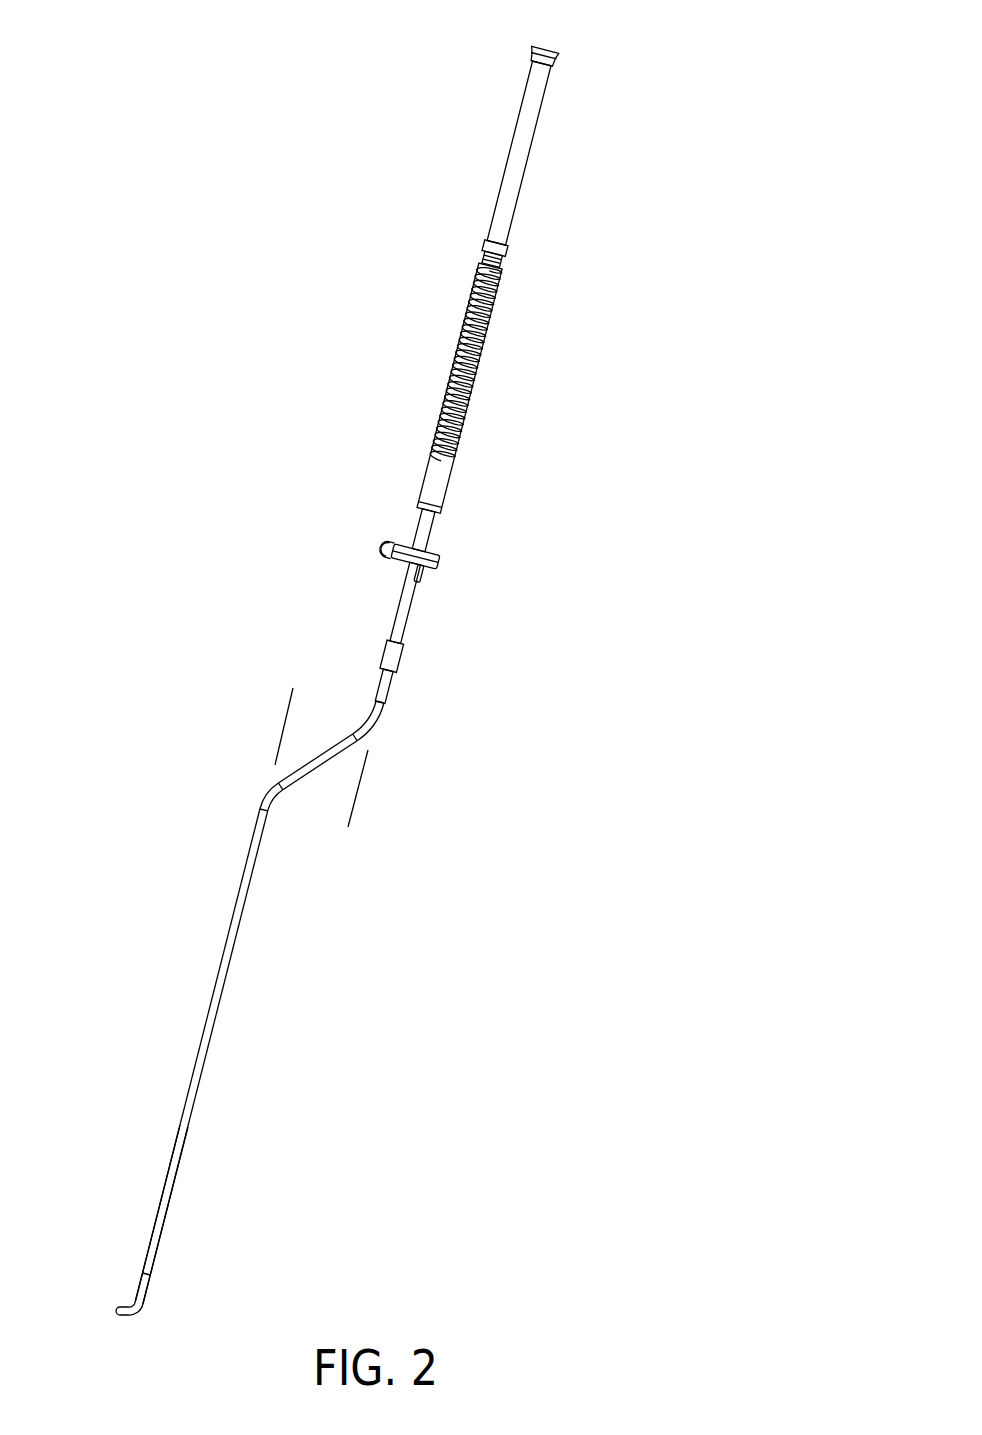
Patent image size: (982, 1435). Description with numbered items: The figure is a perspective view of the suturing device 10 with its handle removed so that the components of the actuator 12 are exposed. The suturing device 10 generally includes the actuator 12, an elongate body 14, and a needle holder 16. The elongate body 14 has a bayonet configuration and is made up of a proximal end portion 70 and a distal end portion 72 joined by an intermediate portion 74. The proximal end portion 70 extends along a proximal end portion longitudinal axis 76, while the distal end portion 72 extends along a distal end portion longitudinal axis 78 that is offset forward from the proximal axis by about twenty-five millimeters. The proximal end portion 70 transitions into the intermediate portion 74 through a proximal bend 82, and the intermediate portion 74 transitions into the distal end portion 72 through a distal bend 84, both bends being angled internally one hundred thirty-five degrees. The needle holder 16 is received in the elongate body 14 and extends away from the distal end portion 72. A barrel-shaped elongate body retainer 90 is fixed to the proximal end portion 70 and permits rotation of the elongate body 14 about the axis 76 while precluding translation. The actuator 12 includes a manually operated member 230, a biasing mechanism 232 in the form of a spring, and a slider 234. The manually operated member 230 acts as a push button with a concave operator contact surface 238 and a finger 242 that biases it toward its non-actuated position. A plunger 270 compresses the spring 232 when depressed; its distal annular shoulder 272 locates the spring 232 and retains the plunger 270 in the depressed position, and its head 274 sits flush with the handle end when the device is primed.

The suturing device 10 is at (682, 365).
The actuator 12 is at (346, 442).
The elongate body 14 is at (247, 868).
The needle holder 16 is at (126, 1314).
The proximal end portion 70 is at (390, 684).
The distal end portion 72 is at (165, 1222).
The intermediate portion 74 is at (319, 756).
The proximal end portion longitudinal axis 76 is at (369, 792).
The distal end portion longitudinal axis 78 is at (282, 714).
The proximal bend 82 is at (371, 729).
The distal bend 84 is at (259, 806).
The elongate body retainer 90 is at (401, 656).
The manually operated member 230 is at (438, 558).
The biasing mechanism 232 is at (458, 343).
The slider 234 is at (447, 488).
The operator contact surface 238 is at (384, 549).
The finger 242 is at (424, 584).
The plunger 270 is at (526, 163).
The distal annular shoulder 272 is at (508, 251).
The head 274 is at (558, 56).